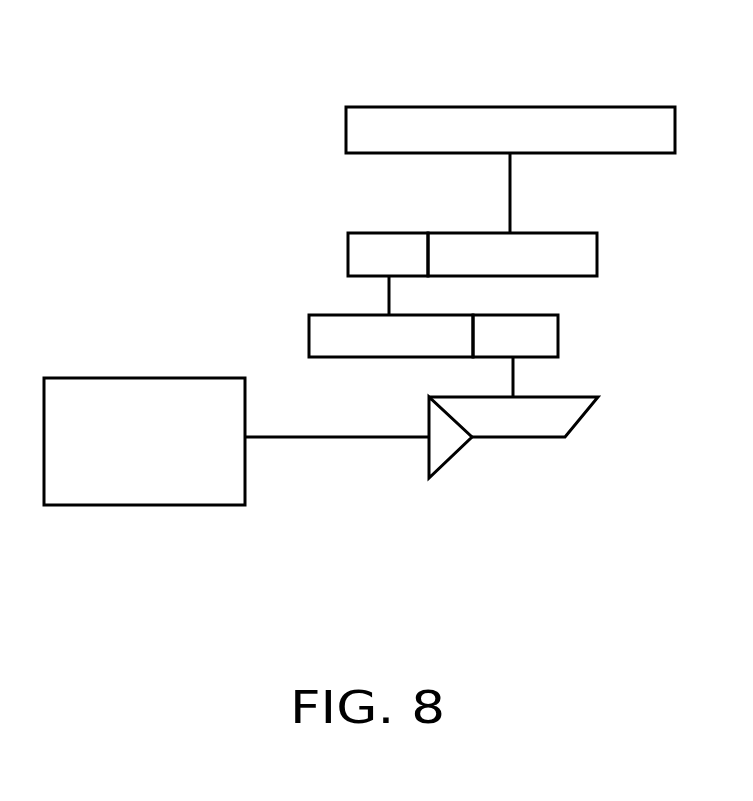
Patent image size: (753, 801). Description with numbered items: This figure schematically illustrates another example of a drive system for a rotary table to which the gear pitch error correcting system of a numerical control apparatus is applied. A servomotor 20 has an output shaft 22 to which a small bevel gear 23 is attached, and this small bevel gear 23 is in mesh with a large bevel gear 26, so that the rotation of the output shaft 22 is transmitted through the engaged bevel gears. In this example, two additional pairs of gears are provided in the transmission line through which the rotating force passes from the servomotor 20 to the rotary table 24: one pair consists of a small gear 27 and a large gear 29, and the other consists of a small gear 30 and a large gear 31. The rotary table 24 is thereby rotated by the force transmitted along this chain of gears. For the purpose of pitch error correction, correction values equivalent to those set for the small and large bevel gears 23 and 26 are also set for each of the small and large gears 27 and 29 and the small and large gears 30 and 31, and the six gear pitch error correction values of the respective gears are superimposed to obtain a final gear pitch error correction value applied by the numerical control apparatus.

The servomotor 20 is at (150, 378).
The output shaft 22 is at (341, 437).
The small bevel gear 23 is at (449, 462).
The rotary table 24 is at (550, 107).
The large bevel gear 26 is at (545, 437).
The small gear 27 is at (558, 328).
The large gear 29 is at (362, 357).
The small gear 30 is at (386, 233).
The large gear 31 is at (555, 233).